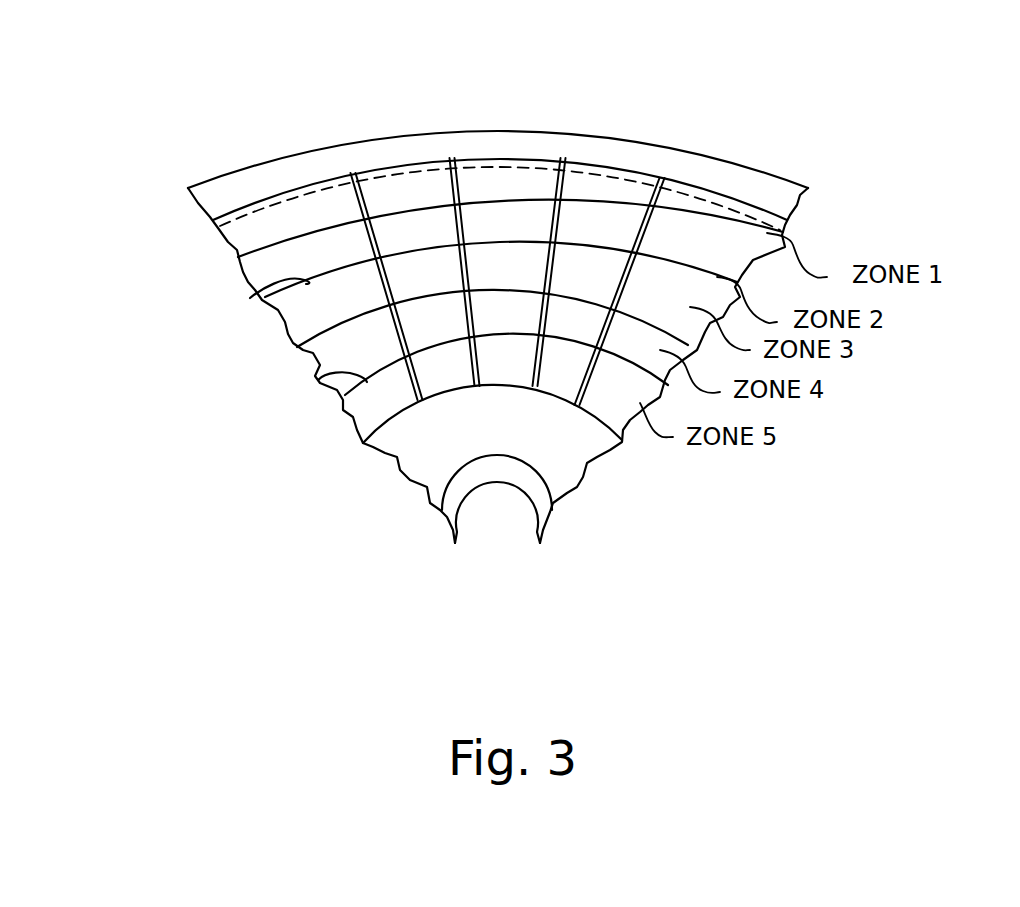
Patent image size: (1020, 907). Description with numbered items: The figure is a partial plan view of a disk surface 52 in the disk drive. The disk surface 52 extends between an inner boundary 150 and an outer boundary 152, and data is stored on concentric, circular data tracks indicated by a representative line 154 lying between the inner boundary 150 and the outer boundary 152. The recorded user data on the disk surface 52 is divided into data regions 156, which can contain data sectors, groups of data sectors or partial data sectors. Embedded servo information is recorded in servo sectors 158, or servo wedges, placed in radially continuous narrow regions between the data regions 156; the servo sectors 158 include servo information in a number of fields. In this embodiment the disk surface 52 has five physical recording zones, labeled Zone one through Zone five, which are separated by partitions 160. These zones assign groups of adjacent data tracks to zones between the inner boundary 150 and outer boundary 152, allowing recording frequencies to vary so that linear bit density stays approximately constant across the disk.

The disk surface 52 is at (163, 131).
The inner boundary 150 is at (388, 445).
The outer boundary 152 is at (533, 160).
The data track 154 is at (277, 202).
The data regions 156 is at (258, 202).
The servo sectors 158 is at (353, 173).
The partitions 160 is at (250, 298).